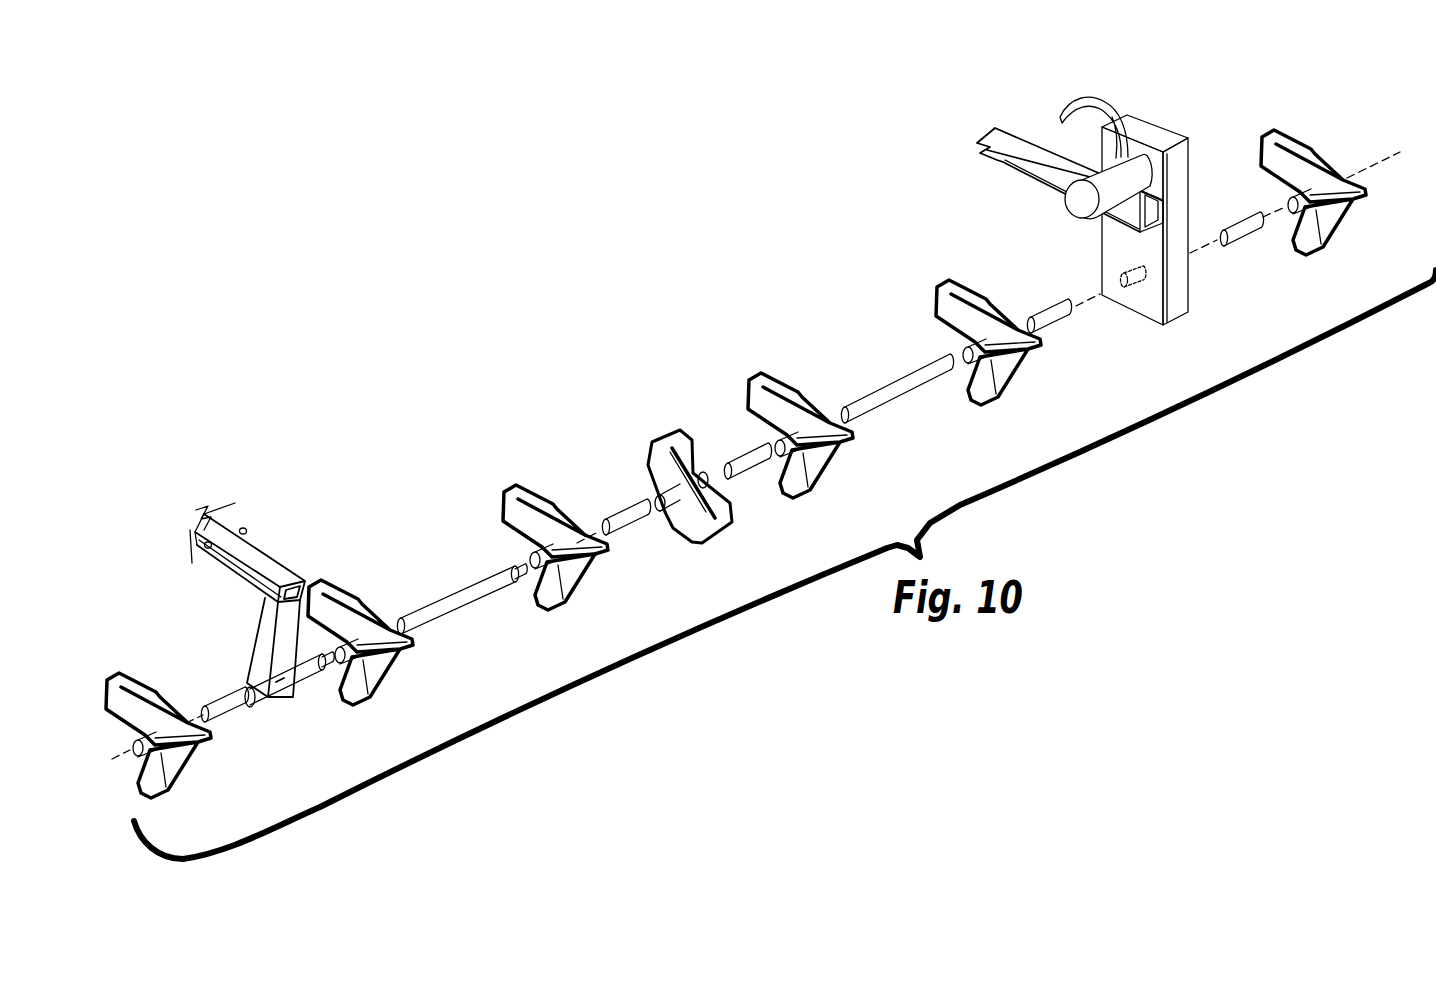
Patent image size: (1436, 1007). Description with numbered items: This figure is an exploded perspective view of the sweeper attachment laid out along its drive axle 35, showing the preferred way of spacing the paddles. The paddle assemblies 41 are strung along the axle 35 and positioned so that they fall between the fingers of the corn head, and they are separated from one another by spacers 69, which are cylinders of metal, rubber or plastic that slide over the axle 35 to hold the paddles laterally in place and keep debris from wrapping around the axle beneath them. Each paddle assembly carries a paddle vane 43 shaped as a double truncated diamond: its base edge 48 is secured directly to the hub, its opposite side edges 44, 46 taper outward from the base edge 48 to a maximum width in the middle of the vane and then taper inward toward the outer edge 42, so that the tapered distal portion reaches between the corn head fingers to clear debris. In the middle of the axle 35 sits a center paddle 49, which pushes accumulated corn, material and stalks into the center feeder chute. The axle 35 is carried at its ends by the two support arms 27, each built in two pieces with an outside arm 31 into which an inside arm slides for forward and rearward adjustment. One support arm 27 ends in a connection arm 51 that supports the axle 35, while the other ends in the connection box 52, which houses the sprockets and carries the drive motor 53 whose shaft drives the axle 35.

The support arm 27 is at (273, 553).
The outside arm 31 is at (237, 567).
The axle 35 is at (428, 632).
The paddle assembly 41 is at (357, 603).
The outer edge 42 is at (513, 487).
The paddle vane 43 is at (773, 375).
The side edge 44 is at (533, 505).
The side edge 46 is at (530, 553).
The base edge 48 is at (486, 556).
The center paddle 49 is at (670, 426).
The connection arm 51 is at (250, 666).
The connection box 52 is at (1158, 134).
The drive motor 53 is at (1081, 196).
The spacer 69 is at (1060, 303).